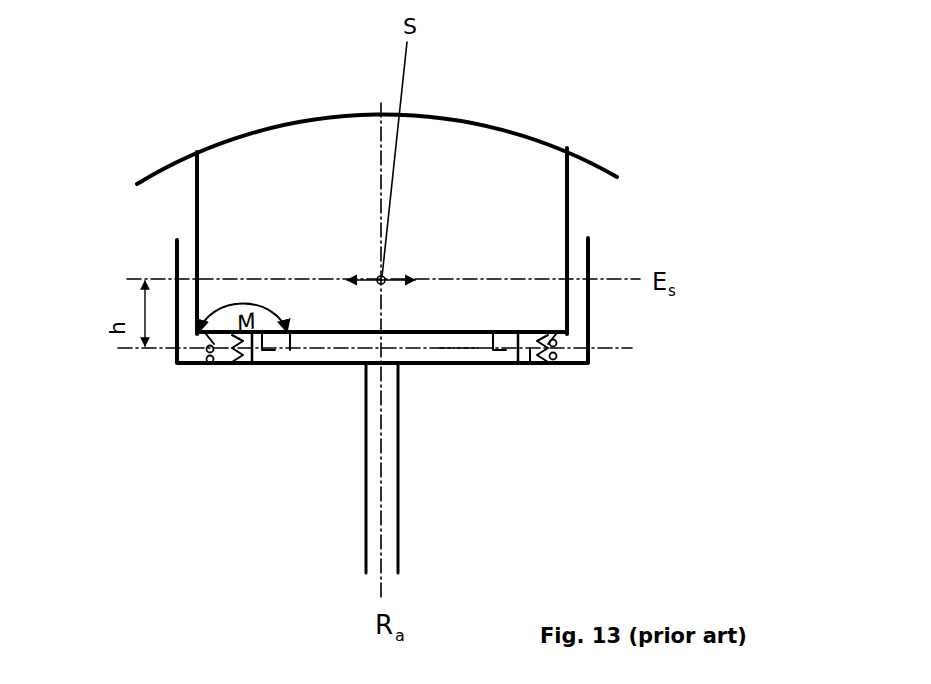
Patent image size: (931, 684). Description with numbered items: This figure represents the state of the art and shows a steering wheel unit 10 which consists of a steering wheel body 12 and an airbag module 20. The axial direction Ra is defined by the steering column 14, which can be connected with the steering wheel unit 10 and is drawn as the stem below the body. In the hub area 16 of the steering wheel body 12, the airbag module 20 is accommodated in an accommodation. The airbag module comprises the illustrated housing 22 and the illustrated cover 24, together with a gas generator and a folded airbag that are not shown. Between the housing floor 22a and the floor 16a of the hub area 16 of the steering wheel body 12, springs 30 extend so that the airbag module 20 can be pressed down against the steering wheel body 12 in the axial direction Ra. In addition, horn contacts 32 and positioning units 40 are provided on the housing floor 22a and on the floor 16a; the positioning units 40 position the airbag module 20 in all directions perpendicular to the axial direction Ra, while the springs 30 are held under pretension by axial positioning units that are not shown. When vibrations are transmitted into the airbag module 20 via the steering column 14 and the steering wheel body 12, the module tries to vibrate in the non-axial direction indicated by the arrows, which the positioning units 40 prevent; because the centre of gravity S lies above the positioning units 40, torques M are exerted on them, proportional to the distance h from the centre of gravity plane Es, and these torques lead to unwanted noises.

The steering wheel unit 10 is at (640, 208).
The steering wheel body 12 is at (592, 320).
The steering column 14 is at (399, 530).
The hub area 16 is at (417, 356).
The floor of the hub area 16a is at (460, 357).
The airbag module 20 is at (196, 173).
The housing 22 is at (568, 167).
The housing floor 22a is at (343, 340).
The cover 24 is at (318, 116).
The springs 30 is at (229, 364).
The horn contacts 32 is at (206, 358).
The positioning units 40 is at (520, 331).